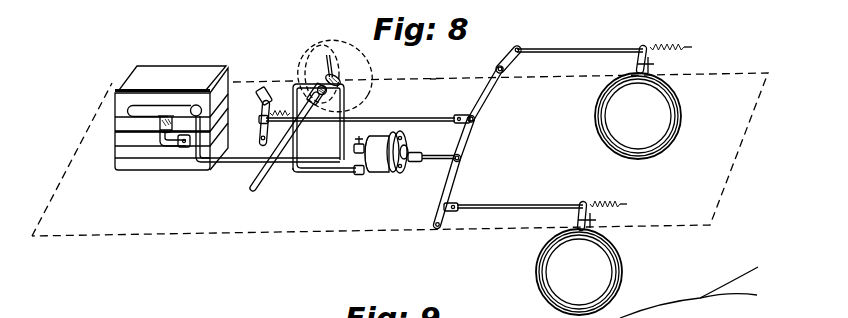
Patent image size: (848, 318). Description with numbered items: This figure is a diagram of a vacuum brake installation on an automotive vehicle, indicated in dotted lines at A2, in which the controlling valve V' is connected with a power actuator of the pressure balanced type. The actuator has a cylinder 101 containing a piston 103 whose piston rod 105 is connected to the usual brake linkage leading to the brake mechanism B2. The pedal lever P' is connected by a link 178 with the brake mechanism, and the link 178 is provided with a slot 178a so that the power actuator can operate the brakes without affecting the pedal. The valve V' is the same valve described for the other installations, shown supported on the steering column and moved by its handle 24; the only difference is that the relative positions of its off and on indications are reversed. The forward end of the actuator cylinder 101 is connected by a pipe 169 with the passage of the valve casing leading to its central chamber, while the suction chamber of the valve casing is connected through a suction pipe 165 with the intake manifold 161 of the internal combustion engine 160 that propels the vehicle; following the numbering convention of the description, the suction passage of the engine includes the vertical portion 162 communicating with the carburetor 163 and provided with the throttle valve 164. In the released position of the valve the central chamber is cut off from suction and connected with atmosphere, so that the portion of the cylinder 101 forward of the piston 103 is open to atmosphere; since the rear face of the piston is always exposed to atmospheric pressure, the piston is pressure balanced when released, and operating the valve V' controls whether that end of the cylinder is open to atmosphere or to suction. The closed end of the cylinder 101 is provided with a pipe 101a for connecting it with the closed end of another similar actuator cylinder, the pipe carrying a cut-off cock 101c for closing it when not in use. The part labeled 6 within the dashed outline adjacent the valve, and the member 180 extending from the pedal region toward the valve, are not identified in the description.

The internal combustion engine 160 is at (168, 70).
The intake manifold 161 is at (126, 111).
The vertical portion of suction passage 162 is at (160, 122).
The throttle valve 164 is at (162, 128).
The carburetor 163 is at (182, 147).
The suction pipe 165 is at (233, 163).
The pipe 169 is at (322, 172).
The pedal lever P' is at (265, 101).
The link 178 is at (392, 117).
The rod 180 is at (268, 182).
The valve V' is at (343, 60).
The handle 24 is at (328, 53).
The dashed ring 6 is at (335, 76).
The cylinder 101 is at (382, 174).
The piston 103 is at (389, 145).
The piston rod 105 is at (416, 154).
The pipe 101a is at (356, 154).
The cut-off cock 101c is at (371, 133).
The slot 178a is at (465, 116).
The automotive vehicle A2 is at (431, 78).
The brake mechanism B2 is at (574, 179).